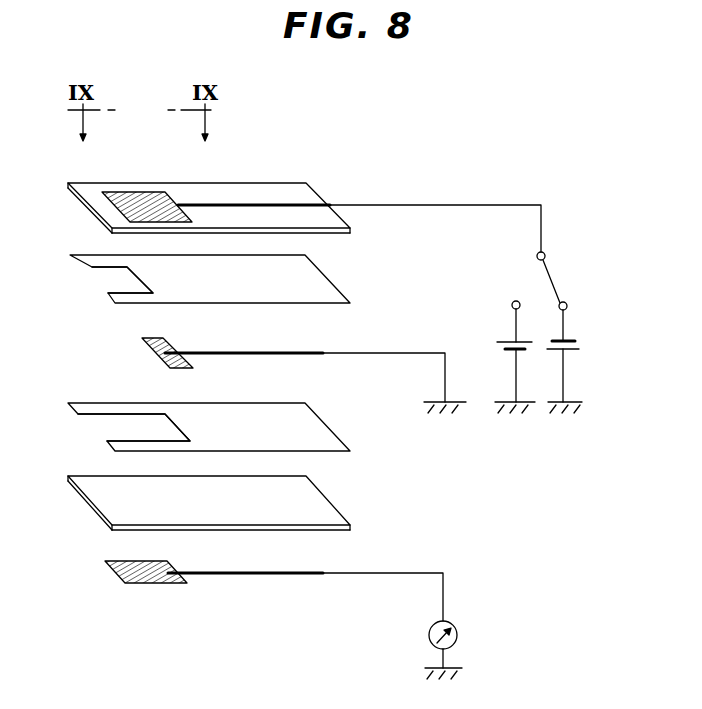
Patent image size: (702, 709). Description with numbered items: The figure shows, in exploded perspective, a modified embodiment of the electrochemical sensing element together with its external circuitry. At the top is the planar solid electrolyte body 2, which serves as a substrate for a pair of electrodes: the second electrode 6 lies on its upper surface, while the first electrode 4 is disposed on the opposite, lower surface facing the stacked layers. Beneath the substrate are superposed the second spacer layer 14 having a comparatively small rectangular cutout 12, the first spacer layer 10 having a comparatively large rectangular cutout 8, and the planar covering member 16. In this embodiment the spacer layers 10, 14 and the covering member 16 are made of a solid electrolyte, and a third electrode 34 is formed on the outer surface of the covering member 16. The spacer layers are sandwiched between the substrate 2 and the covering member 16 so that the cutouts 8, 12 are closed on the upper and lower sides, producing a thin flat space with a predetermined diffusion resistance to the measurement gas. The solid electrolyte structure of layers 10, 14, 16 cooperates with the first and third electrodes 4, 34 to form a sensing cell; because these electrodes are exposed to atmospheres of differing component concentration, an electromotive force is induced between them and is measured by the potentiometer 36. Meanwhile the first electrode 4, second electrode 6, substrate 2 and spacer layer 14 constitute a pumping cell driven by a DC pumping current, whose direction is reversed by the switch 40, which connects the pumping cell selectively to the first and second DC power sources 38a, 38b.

The planar solid electrolyte body 2 is at (307, 193).
The second electrode 6 is at (130, 195).
The comparatively small rectangular cutout 12 is at (93, 266).
The second spacer layer 14 is at (324, 290).
The first electrode 4 is at (153, 343).
The comparatively large rectangular cutout 8 is at (98, 416).
The first spacer layer 10 is at (325, 431).
The planar covering member 16 is at (327, 508).
The third electrode 34 is at (112, 568).
The potentiometer 36 is at (459, 637).
The first DC power source 38a is at (495, 348).
The second DC power source 38b is at (577, 346).
The switch 40 is at (563, 272).